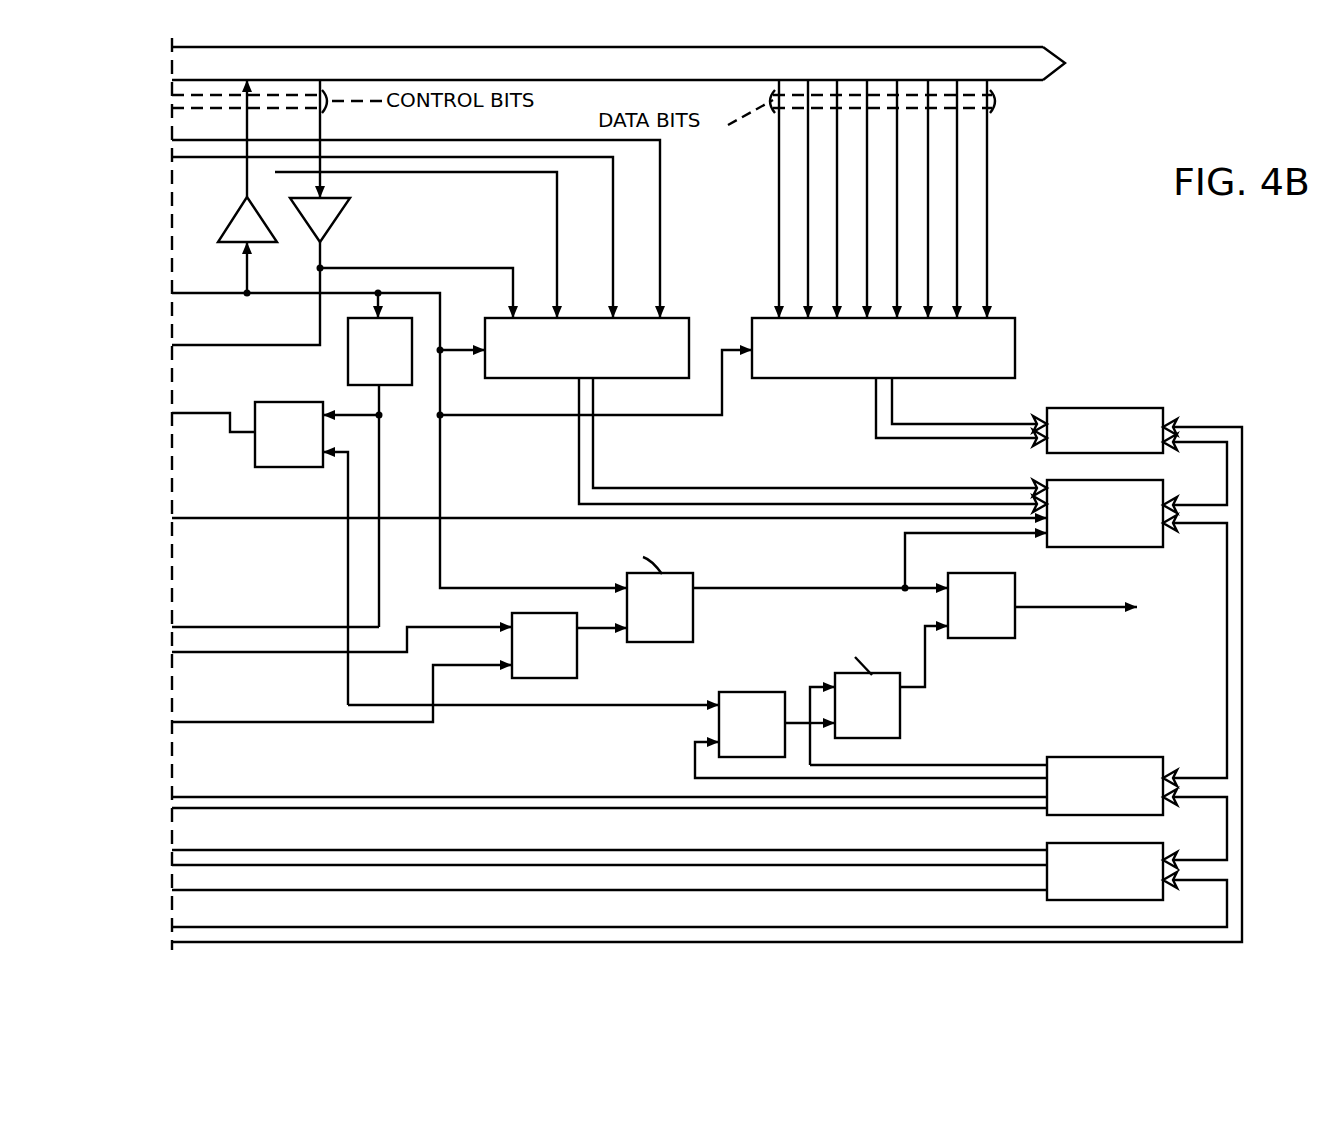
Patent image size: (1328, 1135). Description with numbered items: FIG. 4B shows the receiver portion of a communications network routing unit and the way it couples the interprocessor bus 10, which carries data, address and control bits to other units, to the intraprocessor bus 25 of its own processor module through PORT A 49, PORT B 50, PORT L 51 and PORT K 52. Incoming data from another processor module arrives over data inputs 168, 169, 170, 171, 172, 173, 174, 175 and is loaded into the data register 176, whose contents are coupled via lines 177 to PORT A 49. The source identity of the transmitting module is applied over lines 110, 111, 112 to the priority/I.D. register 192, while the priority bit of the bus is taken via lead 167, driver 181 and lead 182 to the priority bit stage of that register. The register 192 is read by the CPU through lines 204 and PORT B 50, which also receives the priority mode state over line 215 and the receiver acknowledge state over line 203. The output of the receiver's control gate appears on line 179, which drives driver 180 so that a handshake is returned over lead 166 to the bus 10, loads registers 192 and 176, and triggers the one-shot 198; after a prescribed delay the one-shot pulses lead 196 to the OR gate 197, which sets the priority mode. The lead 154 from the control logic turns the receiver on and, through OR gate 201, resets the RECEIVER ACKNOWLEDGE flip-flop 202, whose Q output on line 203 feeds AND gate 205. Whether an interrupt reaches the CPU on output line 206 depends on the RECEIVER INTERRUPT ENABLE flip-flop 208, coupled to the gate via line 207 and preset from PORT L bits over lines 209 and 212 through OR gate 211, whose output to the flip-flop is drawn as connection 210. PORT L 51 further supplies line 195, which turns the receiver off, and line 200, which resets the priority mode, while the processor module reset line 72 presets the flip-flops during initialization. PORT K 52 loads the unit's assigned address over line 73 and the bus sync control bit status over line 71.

The interprocessor bus 10 is at (1010, 77).
The intraprocessor bus 25 is at (277, 925).
The PORT A 49 is at (1118, 408).
The PORT B 50 is at (1072, 482).
The PORT L 51 is at (1117, 757).
The PORT K 52 is at (1072, 847).
The line 71 is at (503, 892).
The processor module reset line 72 is at (530, 708).
The line 73 is at (585, 852).
The line 110 is at (473, 140).
The line 111 is at (565, 157).
The line 112 is at (515, 175).
The lead 154 is at (268, 720).
The lead 166 is at (242, 127).
The lead 167 is at (325, 127).
The data input 168 is at (779, 154).
The data input 169 is at (808, 178).
The data input 170 is at (837, 203).
The data input 171 is at (867, 228).
The data input 172 is at (897, 154).
The data input 173 is at (928, 178).
The data input 174 is at (957, 203).
The data input 175 is at (987, 228).
The data register 176 is at (1015, 330).
The lines 177 is at (876, 405).
The line 179 is at (213, 293).
The driver 180 is at (242, 212).
The driver 181 is at (328, 215).
The lead 182 is at (437, 268).
The priority/I.D. register 192 is at (677, 325).
The line 195 is at (337, 810).
The lead 196 is at (377, 403).
The OR gate 197 is at (267, 407).
The one-shot 198 is at (357, 365).
The line 200 is at (285, 795).
The OR gate 201 is at (528, 617).
The RECEIVER ACKNOWLEDGE flip-flop 202 is at (668, 573).
The line 203 is at (743, 587).
The lines 204 is at (713, 495).
The AND gate 205 is at (983, 635).
The output line 206 is at (1068, 608).
The line 207 is at (927, 680).
The RECEIVER INTERRUPT ENABLE flip-flop 208 is at (900, 720).
The line 209 is at (813, 750).
The set line 210 is at (807, 725).
The OR gate 211 is at (725, 695).
The line 212 is at (695, 760).
The line 215 is at (267, 516).